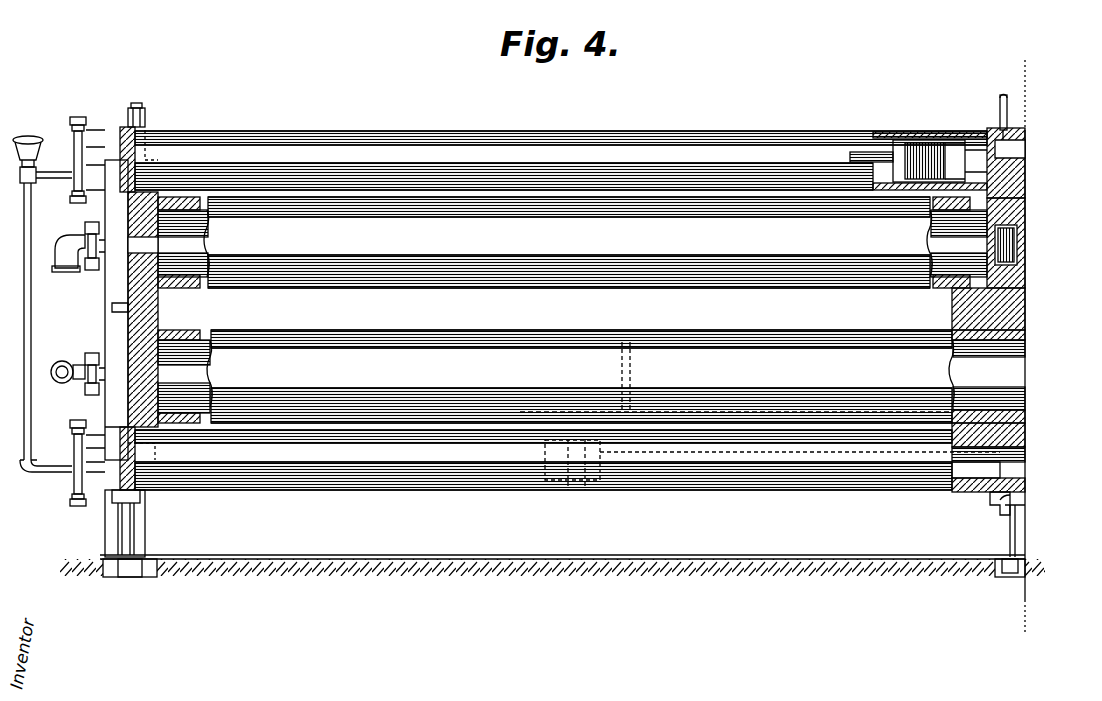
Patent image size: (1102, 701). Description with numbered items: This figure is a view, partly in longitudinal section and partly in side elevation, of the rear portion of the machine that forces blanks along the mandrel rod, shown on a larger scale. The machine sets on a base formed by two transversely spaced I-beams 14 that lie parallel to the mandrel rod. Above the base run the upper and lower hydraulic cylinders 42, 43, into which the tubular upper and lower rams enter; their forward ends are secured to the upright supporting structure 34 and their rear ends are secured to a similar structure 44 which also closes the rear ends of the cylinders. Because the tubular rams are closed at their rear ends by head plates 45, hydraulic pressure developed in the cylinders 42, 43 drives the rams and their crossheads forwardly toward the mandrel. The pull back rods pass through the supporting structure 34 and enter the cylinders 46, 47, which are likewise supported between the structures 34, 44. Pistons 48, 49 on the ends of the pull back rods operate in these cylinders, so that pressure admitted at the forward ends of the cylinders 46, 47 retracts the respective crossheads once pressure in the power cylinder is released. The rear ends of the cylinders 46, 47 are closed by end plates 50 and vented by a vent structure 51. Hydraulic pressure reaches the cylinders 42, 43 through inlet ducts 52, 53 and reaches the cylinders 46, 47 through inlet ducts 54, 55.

The I-beams 14 is at (296, 555).
The supporting structure 34 is at (1030, 136).
The hydraulic cylinder 42 is at (756, 238).
The hydraulic cylinder 43 is at (689, 376).
The structure 44 is at (146, 130).
The head plates 45 is at (988, 255).
The cylinder 46 is at (758, 148).
The cylinder 47 is at (767, 478).
The piston 48 is at (930, 136).
The piston 49 is at (580, 495).
The end plates 50 is at (72, 152).
The vent structure 51 is at (34, 133).
The inlet duct 52 is at (65, 268).
The inlet duct 53 is at (62, 362).
The inlet duct 54 is at (1006, 97).
The inlet duct 55 is at (1003, 515).